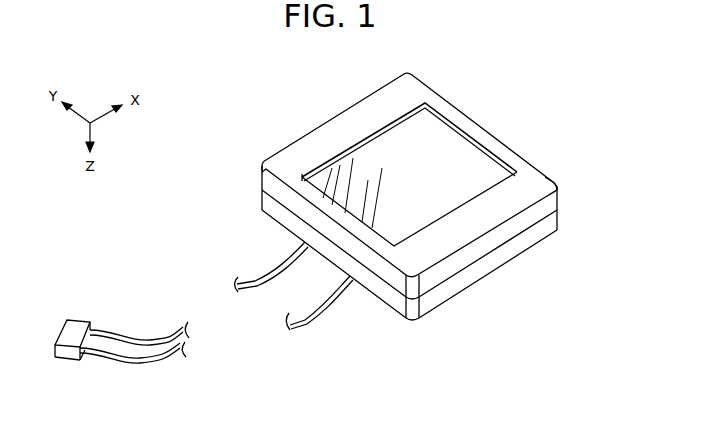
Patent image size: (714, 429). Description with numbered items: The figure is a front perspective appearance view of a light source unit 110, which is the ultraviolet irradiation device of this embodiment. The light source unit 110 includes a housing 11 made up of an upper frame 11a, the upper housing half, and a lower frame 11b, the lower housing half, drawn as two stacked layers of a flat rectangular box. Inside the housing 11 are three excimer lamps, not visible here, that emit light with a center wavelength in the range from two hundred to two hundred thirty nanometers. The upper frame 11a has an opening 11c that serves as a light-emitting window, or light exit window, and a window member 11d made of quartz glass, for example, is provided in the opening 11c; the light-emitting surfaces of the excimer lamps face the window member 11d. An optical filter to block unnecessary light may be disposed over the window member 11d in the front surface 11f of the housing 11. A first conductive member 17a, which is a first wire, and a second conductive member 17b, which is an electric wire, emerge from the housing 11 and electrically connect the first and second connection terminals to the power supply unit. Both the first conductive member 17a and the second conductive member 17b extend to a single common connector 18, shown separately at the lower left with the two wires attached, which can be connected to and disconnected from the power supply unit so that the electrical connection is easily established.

The light source unit 110 is at (236, 113).
The housing 11 is at (355, 107).
The upper frame 11a is at (557, 200).
The lower frame 11b is at (558, 221).
The opening 11c is at (326, 202).
The window member 11d is at (460, 148).
The front surface 11f is at (535, 182).
The first conductive member 17a is at (260, 275).
The second conductive member 17b is at (330, 308).
The connector 18 is at (80, 322).